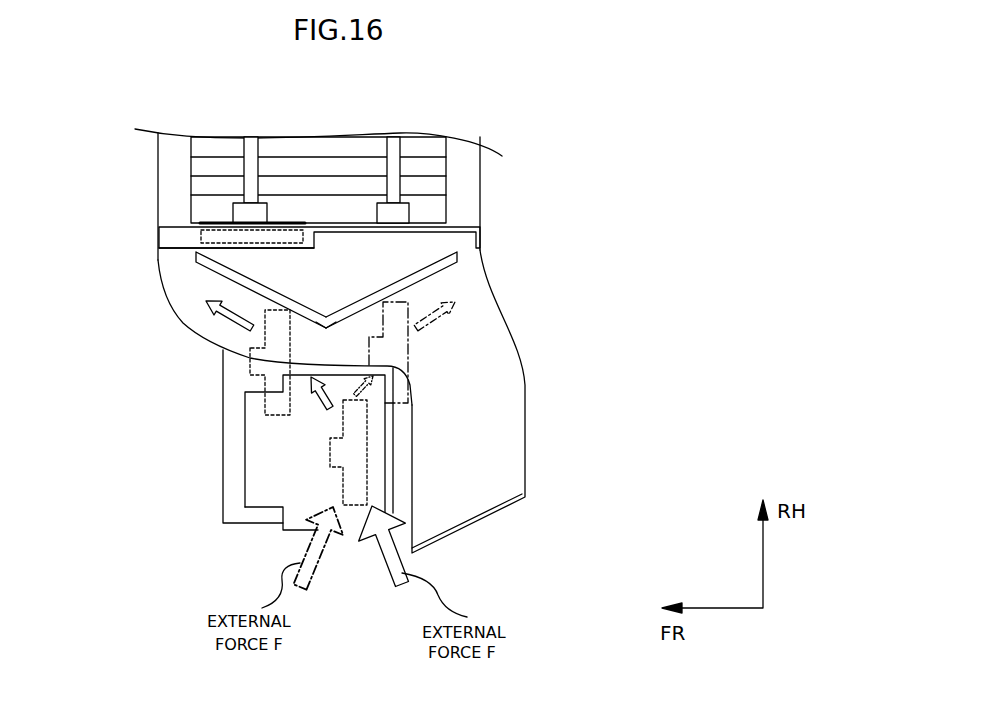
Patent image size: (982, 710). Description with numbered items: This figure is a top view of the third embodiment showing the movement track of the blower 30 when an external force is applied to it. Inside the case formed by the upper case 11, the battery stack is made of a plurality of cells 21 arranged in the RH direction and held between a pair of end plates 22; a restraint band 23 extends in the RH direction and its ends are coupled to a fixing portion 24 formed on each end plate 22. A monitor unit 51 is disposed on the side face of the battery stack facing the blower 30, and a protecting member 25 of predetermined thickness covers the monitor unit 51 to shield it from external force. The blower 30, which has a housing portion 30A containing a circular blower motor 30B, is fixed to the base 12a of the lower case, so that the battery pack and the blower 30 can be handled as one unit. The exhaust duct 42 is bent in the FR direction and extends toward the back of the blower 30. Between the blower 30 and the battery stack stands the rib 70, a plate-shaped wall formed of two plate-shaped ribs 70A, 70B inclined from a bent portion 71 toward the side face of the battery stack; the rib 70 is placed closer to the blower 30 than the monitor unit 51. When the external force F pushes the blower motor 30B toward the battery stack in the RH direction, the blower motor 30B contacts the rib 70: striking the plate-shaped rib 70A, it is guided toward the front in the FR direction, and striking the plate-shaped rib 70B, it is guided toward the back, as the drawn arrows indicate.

The upper case 11 is at (167, 155).
The base 12a is at (232, 425).
The cell 21 is at (437, 182).
The end plate 22 is at (437, 209).
The restraint band 23 is at (252, 145).
The fixing portion 24 is at (240, 213).
The protecting member 25 is at (177, 248).
The blower 30 is at (290, 457).
The housing portion 30A is at (265, 502).
The blower motor 30B is at (355, 503).
The exhaust duct 42 is at (532, 396).
The monitor unit 51 is at (200, 231).
The rib 70 is at (333, 299).
The plate-shaped rib 70A is at (230, 278).
The plate-shaped rib 70B is at (428, 272).
The bent portion 71 is at (327, 315).